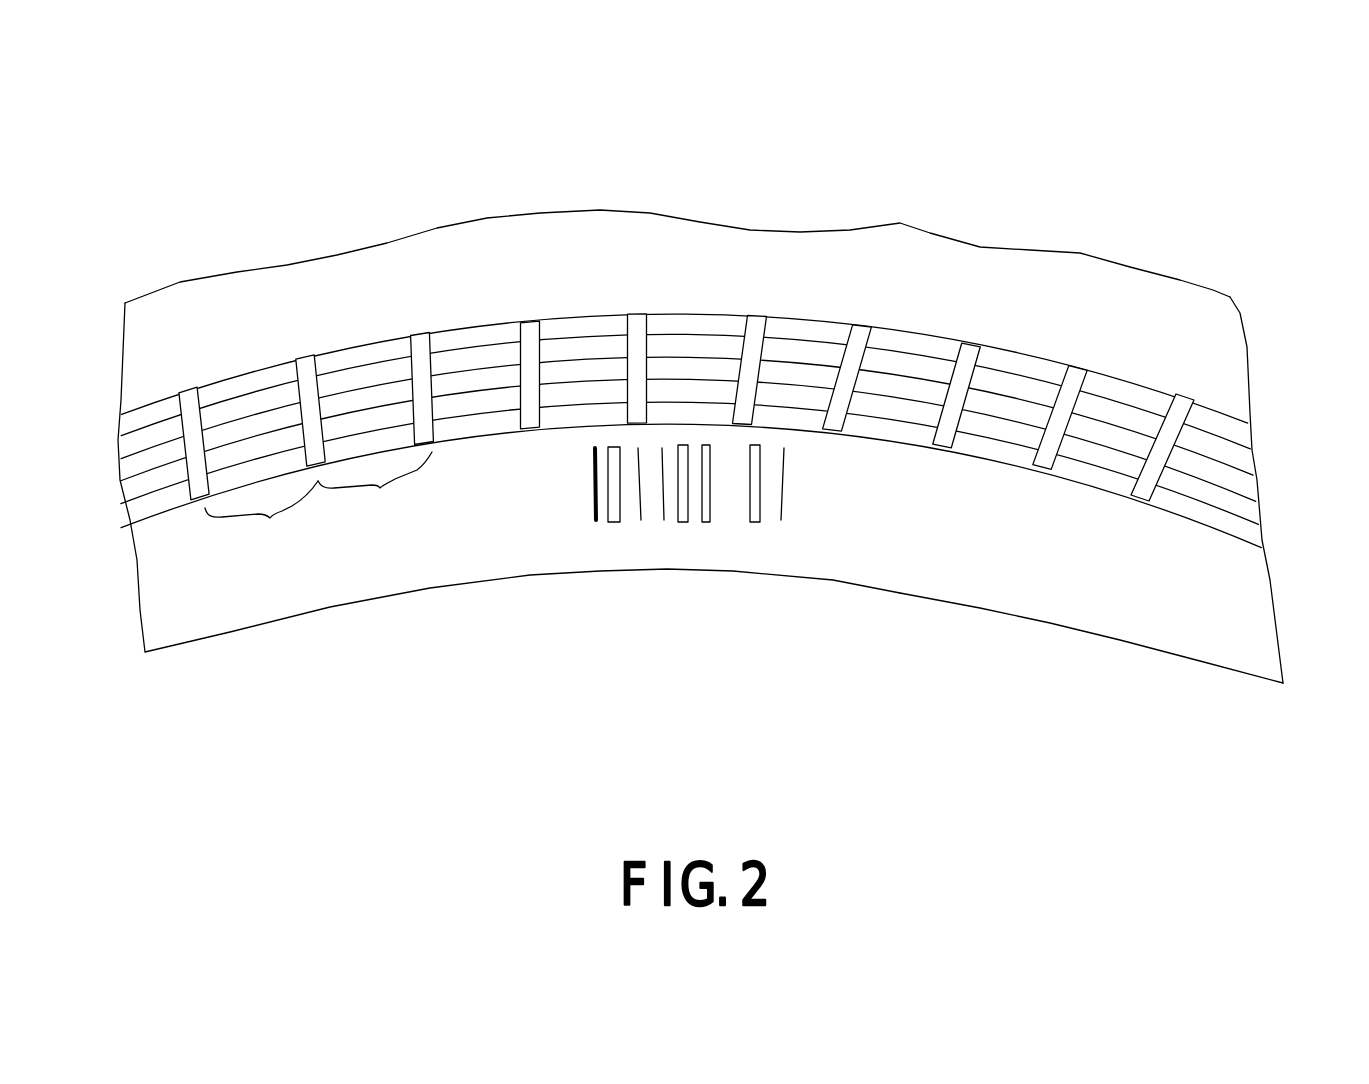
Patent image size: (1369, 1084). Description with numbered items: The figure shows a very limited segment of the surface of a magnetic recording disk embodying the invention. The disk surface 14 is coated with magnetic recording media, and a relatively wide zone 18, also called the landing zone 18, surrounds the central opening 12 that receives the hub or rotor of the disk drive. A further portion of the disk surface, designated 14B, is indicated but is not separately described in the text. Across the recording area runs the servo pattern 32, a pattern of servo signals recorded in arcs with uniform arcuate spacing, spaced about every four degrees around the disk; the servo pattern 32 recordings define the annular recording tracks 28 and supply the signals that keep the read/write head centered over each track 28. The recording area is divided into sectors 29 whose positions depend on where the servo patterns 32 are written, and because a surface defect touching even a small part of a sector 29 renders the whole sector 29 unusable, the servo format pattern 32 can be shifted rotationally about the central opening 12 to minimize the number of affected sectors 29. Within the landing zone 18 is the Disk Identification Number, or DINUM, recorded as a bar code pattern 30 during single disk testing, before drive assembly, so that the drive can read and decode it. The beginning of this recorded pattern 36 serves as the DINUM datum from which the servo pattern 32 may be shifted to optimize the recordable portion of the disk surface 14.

The central opening 12 is at (1002, 600).
The disk surface 14 is at (1080, 287).
The tread shoulder portion 14B is at (900, 282).
The wide zone 18 is at (1122, 610).
The annular recording track 28 is at (1250, 427).
The sector 29 is at (269, 519).
The bar code pattern 30 is at (805, 509).
The servo pattern 32 is at (528, 318).
The recorded pattern 36 is at (593, 487).